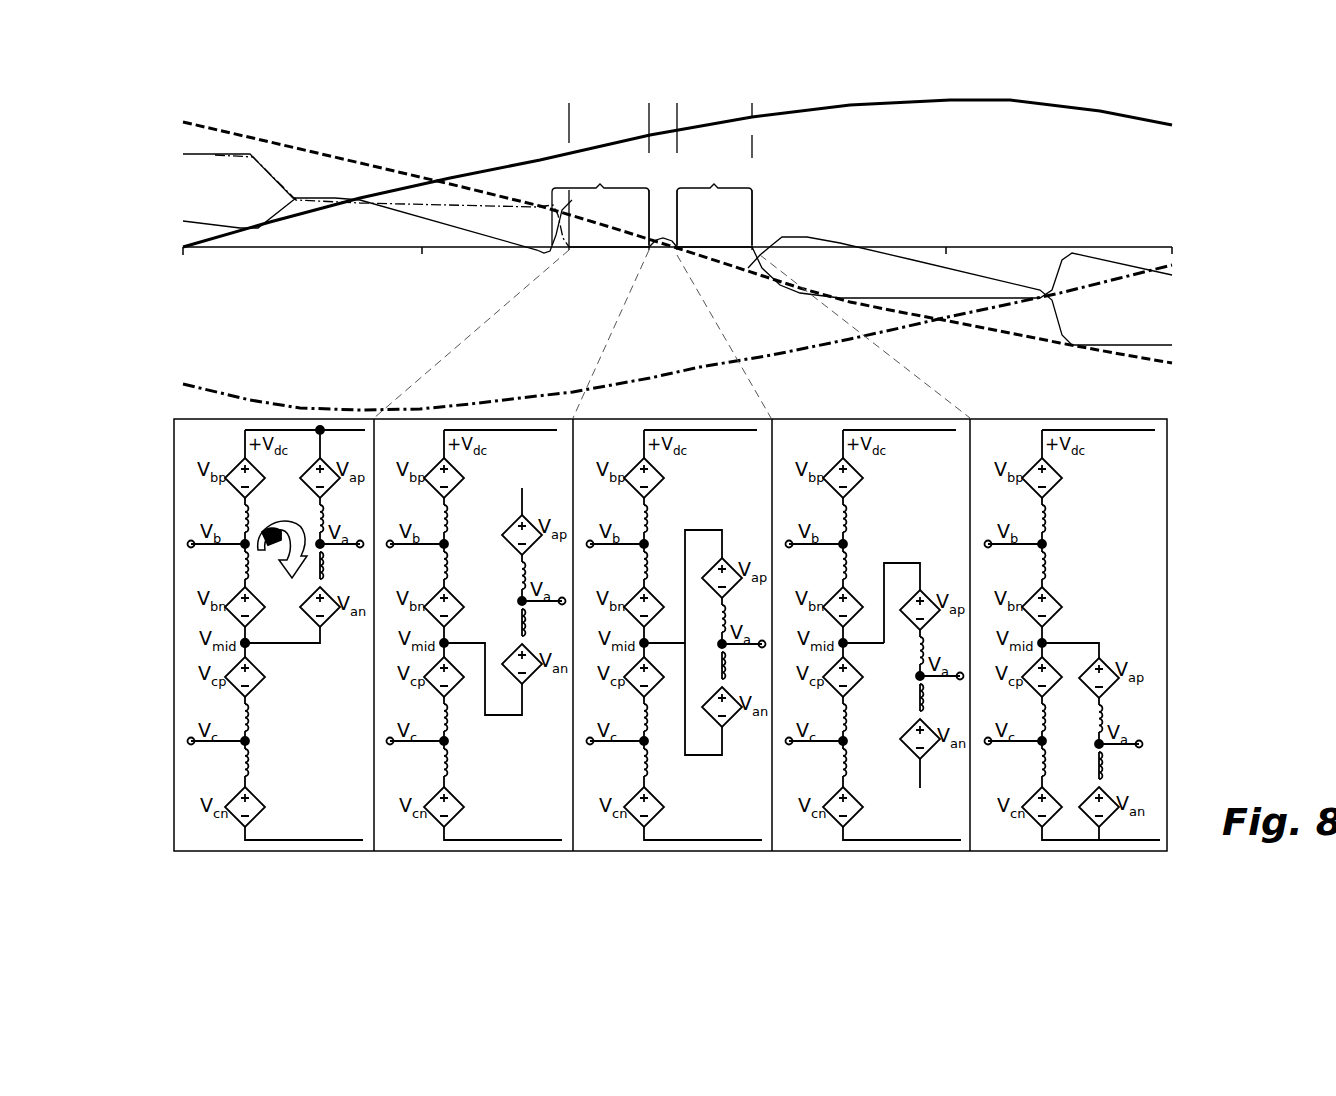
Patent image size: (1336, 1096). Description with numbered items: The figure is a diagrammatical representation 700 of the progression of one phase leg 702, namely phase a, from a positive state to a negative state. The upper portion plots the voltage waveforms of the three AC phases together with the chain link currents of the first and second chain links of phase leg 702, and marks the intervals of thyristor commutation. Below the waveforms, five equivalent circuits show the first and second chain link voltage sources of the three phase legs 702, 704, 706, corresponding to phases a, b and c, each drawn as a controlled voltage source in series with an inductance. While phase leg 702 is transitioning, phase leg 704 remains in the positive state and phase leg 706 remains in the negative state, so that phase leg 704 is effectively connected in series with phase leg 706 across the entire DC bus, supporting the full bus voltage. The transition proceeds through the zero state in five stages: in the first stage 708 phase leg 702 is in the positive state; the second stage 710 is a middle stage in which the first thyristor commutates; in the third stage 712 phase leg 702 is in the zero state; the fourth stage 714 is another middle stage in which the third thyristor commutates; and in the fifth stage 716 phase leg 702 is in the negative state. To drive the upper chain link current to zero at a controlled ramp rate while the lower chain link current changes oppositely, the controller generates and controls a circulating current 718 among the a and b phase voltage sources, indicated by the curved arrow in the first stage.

The diagrammatical representation 700 is at (1283, 211).
The phase leg 702 is at (303, 644).
The phase leg 704 is at (245, 445).
The phase leg 706 is at (247, 648).
The first stage 708 is at (275, 628).
The second stage 710 is at (530, 822).
The third stage 712 is at (725, 822).
The fourth stage 714 is at (930, 501).
The fifth stage 716 is at (1128, 511).
The circulating current 718 is at (255, 550).